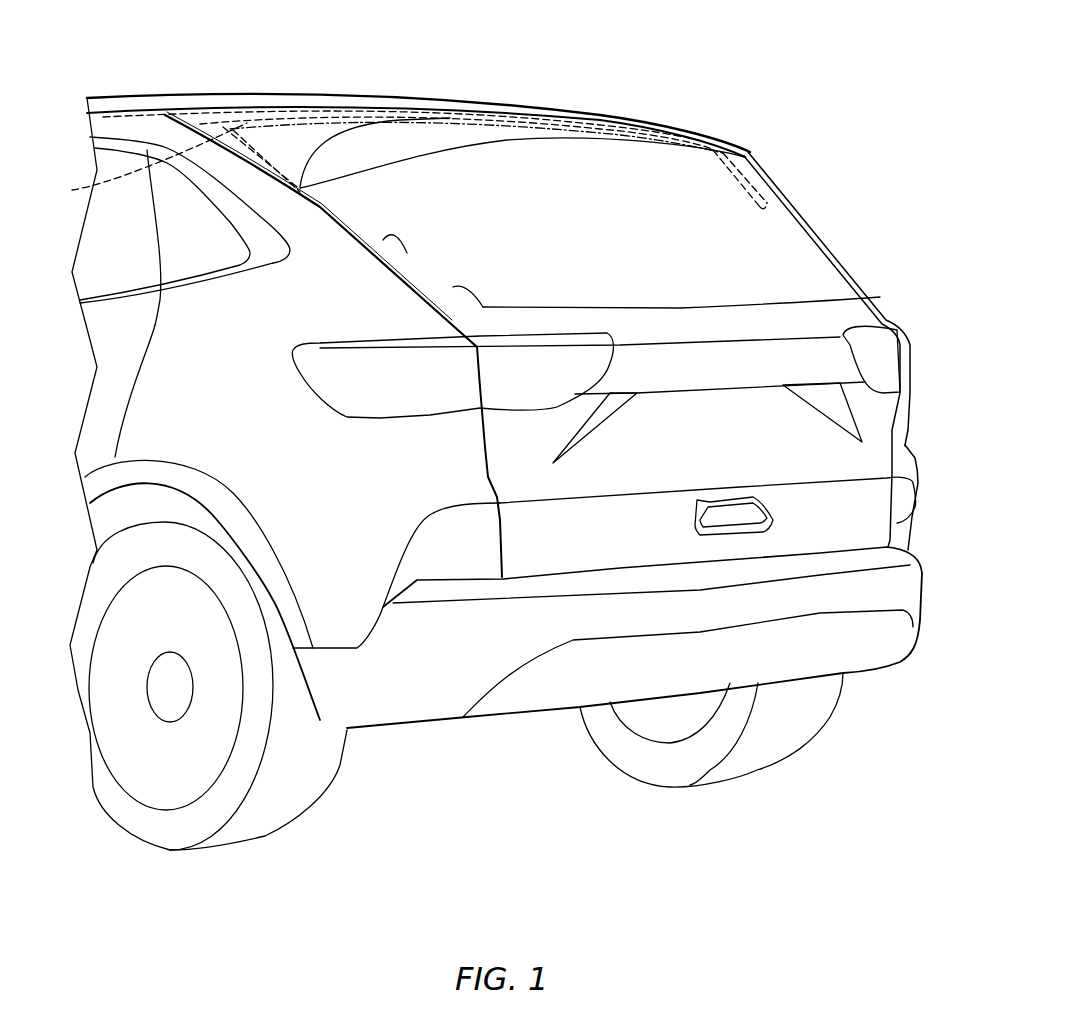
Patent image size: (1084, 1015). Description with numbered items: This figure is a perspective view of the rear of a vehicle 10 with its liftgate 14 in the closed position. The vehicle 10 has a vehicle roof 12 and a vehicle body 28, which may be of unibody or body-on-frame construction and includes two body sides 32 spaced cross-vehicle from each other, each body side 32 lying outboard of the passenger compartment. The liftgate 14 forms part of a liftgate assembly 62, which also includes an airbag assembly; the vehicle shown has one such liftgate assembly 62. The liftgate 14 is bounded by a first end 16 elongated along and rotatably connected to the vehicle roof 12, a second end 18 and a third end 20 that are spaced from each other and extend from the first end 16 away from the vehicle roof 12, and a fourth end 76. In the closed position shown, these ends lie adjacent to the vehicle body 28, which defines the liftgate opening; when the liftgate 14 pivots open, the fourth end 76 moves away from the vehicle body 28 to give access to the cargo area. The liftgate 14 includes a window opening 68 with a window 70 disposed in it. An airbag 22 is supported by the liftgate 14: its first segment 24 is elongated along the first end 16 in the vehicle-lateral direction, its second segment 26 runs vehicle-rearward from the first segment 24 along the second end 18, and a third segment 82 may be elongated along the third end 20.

The vehicle 10 is at (817, 184).
The vehicle roof 12 is at (137, 97).
The liftgate 14 is at (840, 457).
The first end 16 is at (293, 108).
The second end 18 is at (483, 458).
The third end 20 is at (915, 517).
The airbag 22 is at (645, 133).
The first segment 24 is at (383, 110).
The second segment 26 is at (73, 190).
The vehicle body 28 is at (829, 248).
The body side 32 is at (153, 415).
The liftgate assembly 62 is at (496, 552).
The window opening 68 is at (453, 287).
The window 70 is at (383, 240).
The fourth end 76 is at (757, 560).
The third segment 82 is at (763, 175).